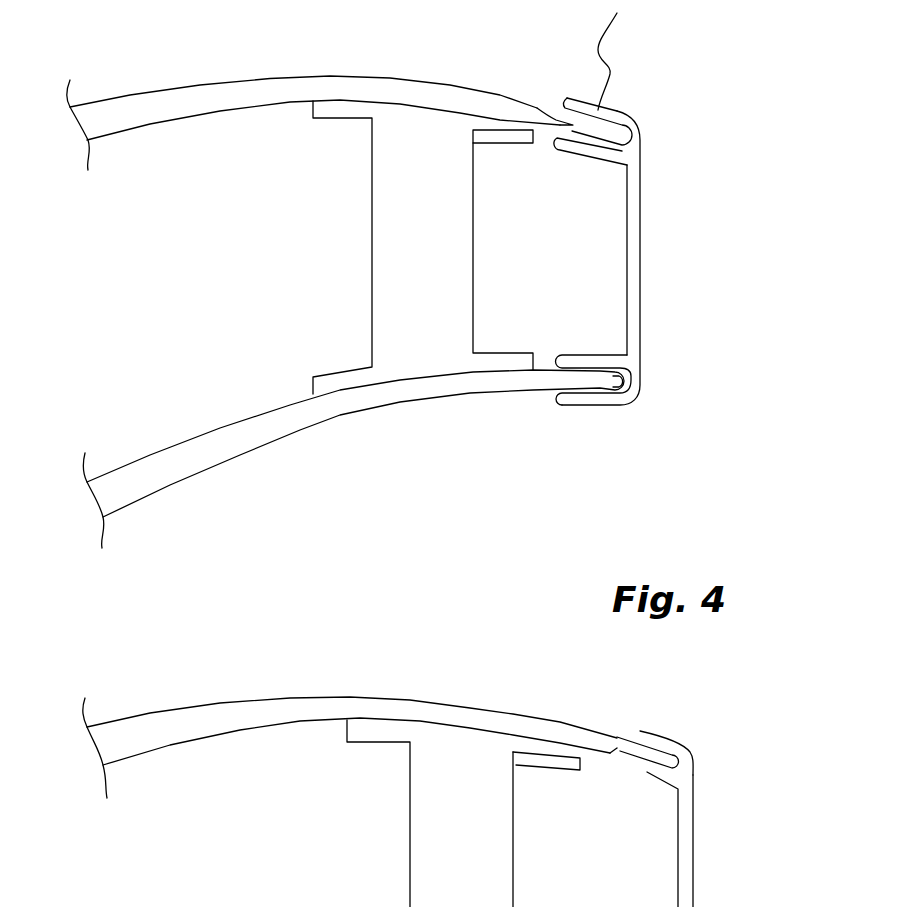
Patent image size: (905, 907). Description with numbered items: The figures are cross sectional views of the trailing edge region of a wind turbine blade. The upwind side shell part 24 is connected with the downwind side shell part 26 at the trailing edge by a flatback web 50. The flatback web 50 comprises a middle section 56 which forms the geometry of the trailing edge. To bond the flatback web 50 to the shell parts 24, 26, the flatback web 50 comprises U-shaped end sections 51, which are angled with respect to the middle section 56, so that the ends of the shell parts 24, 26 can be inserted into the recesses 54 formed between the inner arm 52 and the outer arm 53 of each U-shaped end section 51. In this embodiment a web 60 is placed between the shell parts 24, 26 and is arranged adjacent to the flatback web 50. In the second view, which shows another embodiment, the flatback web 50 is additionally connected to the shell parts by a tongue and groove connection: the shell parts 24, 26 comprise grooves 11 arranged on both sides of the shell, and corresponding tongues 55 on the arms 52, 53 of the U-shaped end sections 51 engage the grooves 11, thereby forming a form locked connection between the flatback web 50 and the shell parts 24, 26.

In FIG. 5, the groove 11 is at (620, 740).
In FIG. 4, the upwind side shell part 24 is at (280, 95).
In FIG. 5, the upwind side shell part 24 is at (230, 712).
In FIG. 4, the downwind side shell part 26 is at (327, 410).
In FIG. 4, the flatback web 50 is at (679, 262).
In FIG. 4, the U-shaped end section 51 is at (617, 112).
In FIG. 4, the inner arm 52 is at (597, 152).
In FIG. 5, the inner arm 52 is at (693, 818).
In FIG. 5, the outer arm 53 is at (648, 731).
In FIG. 4, the recess 54 is at (537, 107).
In FIG. 5, the tongue 55 is at (630, 730).
In FIG. 4, the middle section 56 is at (641, 290).
In FIG. 4, the web 60 is at (403, 247).
In FIG. 5, the web 60 is at (463, 813).